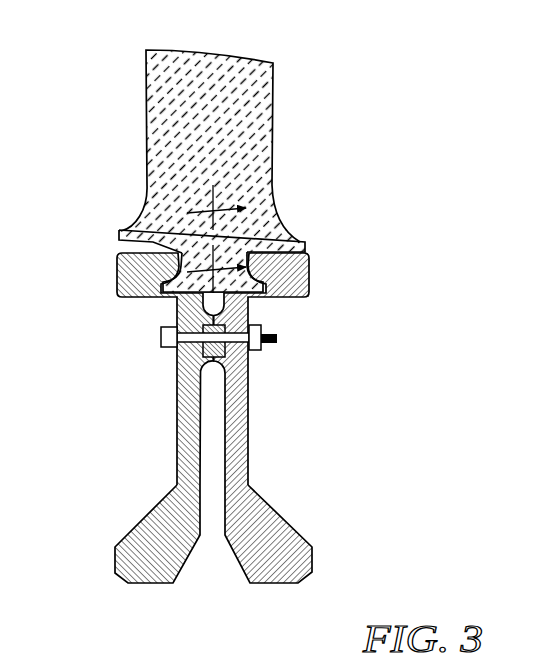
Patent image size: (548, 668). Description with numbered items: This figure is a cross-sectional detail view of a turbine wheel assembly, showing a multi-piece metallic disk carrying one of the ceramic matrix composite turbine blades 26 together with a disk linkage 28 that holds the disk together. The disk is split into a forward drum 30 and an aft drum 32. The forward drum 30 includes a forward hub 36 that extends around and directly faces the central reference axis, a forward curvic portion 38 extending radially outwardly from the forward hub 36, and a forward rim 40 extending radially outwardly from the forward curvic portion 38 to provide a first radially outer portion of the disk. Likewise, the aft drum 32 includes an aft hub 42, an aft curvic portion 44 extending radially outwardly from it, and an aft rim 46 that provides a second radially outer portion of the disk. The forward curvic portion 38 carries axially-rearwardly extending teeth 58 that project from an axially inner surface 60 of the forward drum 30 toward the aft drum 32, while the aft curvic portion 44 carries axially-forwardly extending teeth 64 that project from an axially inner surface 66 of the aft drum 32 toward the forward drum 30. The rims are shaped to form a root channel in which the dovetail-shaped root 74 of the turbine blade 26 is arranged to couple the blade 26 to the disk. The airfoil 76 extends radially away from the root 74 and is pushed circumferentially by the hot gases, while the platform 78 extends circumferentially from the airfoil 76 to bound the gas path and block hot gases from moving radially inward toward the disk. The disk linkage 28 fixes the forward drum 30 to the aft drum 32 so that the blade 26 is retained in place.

The turbine blade 26 is at (235, 168).
The airfoil 76 is at (273, 84).
The root 74 is at (120, 232).
The platform 78 is at (295, 238).
The forward rim 40 is at (212, 416).
The disk linkage 28 is at (188, 343).
The forward drum 30 is at (113, 418).
The aft drum 32 is at (313, 418).
The forward curvic portion 38 is at (176, 363).
The aft curvic portion 44 is at (253, 367).
The aft rim 46 is at (310, 272).
The axially-rearwardly extending teeth 58 is at (249, 322).
The axially-forwardly extending teeth 64 is at (203, 353).
The forward hub 36 is at (113, 561).
The aft hub 42 is at (314, 562).
The axially inner surface 60 is at (200, 500).
The axially inner surface 66 is at (215, 465).